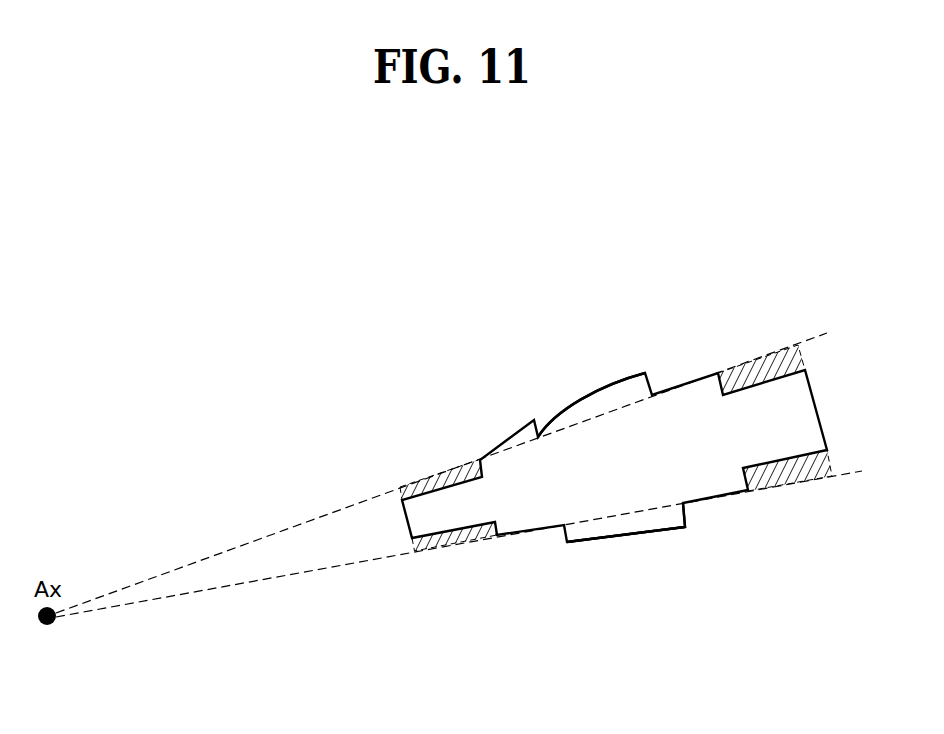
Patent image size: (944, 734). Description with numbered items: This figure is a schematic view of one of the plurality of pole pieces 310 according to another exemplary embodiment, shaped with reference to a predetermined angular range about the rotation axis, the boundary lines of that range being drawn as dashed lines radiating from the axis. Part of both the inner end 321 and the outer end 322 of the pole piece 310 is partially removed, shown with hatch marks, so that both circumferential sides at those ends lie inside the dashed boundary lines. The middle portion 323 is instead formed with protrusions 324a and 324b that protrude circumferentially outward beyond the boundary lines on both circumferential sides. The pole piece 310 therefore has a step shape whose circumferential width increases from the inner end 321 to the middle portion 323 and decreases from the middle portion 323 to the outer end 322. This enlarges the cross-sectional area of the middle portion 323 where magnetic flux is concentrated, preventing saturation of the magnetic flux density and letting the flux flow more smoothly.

The pole piece 310 is at (479, 393).
The inner end 321 is at (433, 522).
The outer end 322 is at (783, 385).
The middle portion 323 is at (595, 478).
The protrusion 324a is at (597, 403).
The protrusion 324b is at (618, 527).